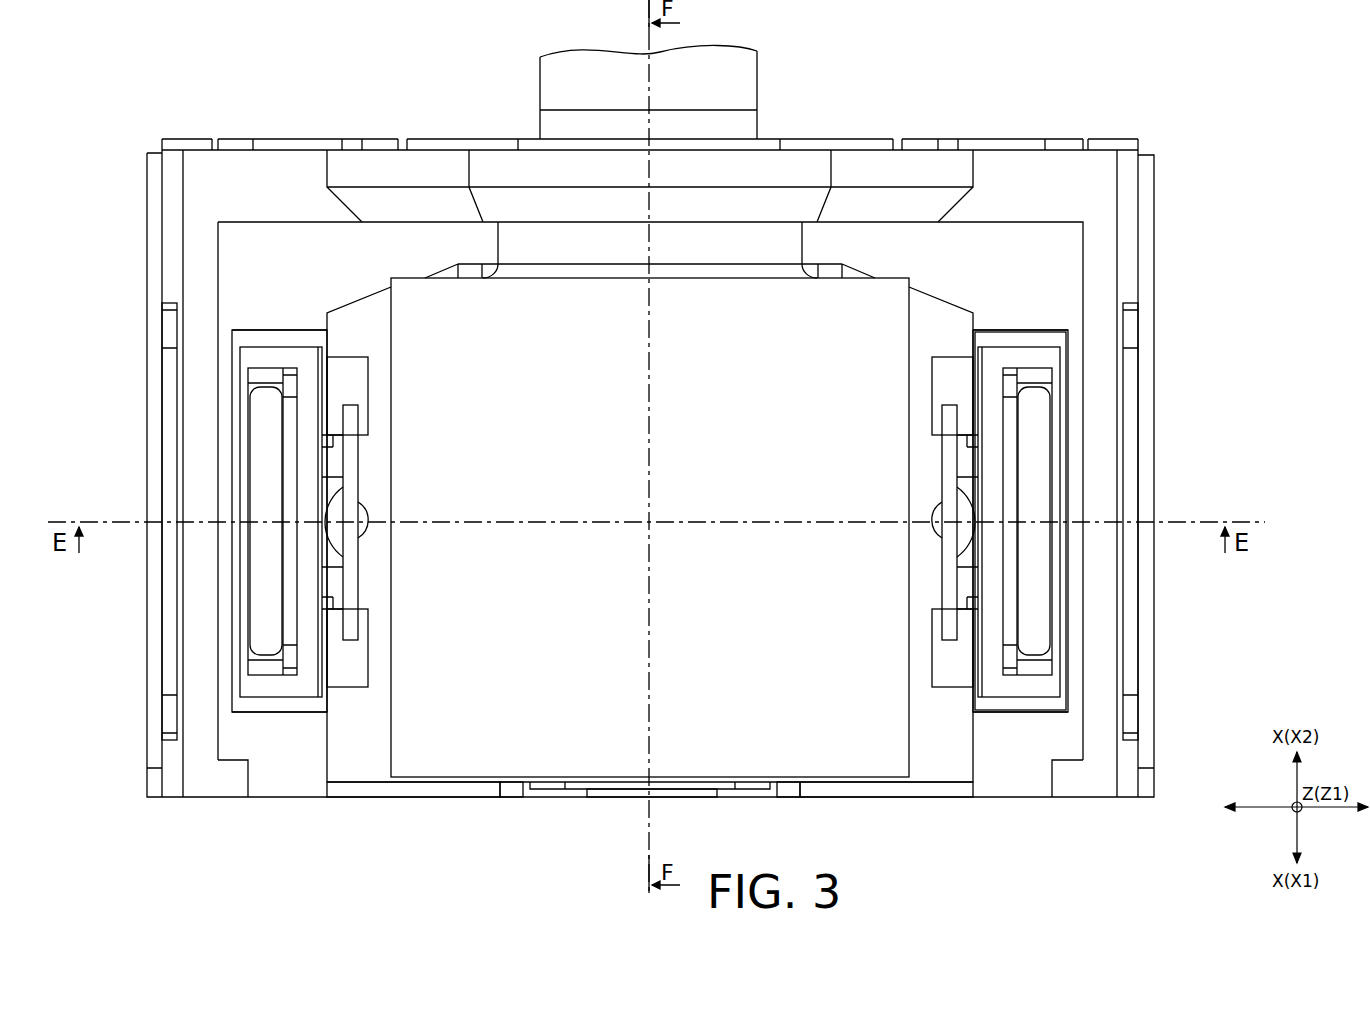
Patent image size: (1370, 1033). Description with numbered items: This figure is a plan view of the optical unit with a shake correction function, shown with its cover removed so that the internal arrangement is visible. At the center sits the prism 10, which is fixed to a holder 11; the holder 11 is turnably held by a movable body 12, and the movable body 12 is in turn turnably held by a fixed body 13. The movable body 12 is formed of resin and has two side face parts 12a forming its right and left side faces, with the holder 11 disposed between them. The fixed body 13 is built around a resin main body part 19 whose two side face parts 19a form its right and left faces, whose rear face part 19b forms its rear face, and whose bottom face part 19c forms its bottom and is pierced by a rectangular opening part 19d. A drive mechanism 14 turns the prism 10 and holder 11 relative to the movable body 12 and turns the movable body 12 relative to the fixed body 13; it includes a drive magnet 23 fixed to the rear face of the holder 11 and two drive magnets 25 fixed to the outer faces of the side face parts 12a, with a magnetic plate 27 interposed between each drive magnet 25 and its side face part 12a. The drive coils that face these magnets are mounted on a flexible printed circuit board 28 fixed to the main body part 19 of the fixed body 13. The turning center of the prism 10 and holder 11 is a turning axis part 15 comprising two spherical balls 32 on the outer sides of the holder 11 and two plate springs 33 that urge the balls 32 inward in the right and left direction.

The prism 10 is at (888, 278).
The holder 11 is at (939, 297).
The movable body 12 is at (1026, 700).
The side face part 12a is at (267, 700).
The fixed body 13 is at (147, 237).
The drive mechanism 14 is at (1188, 192).
The turning axis part 15 is at (323, 497).
The main body part 19 is at (650, 459).
The side face part 19a is at (213, 799).
The rear face part 19b is at (957, 139).
The bottom face part 19c is at (441, 799).
The opening part 19d is at (303, 714).
The drive magnet 23 is at (753, 263).
The drive magnet 25 is at (265, 387).
The magnetic plate 27 is at (293, 368).
The flexible printed circuit board 28 is at (758, 80).
The ball 32 is at (363, 505).
The plate spring 33 is at (360, 423).